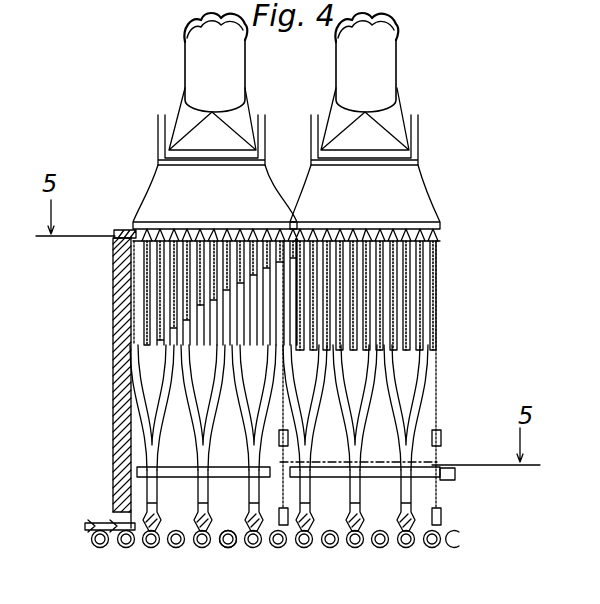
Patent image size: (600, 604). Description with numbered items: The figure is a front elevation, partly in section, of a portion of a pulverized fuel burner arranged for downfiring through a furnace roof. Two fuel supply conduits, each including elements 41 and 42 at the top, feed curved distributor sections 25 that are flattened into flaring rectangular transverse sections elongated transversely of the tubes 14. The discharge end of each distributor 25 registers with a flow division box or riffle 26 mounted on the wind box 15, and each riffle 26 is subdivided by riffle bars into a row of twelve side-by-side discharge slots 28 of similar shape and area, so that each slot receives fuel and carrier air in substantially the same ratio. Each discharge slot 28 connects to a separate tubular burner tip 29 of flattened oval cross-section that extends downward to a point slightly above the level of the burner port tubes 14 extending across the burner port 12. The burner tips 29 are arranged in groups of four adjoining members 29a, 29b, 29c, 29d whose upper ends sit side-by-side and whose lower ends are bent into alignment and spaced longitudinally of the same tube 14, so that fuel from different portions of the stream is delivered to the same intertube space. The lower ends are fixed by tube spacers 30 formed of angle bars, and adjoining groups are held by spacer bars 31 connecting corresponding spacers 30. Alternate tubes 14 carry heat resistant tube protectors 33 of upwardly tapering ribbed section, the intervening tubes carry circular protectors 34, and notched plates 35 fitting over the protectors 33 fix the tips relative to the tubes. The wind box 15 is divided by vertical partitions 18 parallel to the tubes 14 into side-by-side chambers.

The burner port 12 is at (215, 549).
The fluid heating tubes 14 is at (284, 549).
The wind box 15 is at (112, 357).
The vertical partitions 18 is at (440, 404).
The distributor section 25 is at (308, 186).
The riffle 26 is at (125, 230).
The discharge slots 28 is at (206, 228).
The burner tips 29 is at (402, 421).
The burner tip 29a is at (152, 372).
The burner tip 29b is at (160, 386).
The burner tip 29c is at (162, 404).
The burner tip 29d is at (164, 428).
The tube spacers 30 is at (445, 480).
The spacer bars 31 is at (228, 467).
The tube protectors 33 is at (157, 526).
The circular protectors 34 is at (228, 528).
The notched plates 35 is at (404, 524).
The cylinder 41 is at (398, 68).
The tray 42 is at (404, 120).